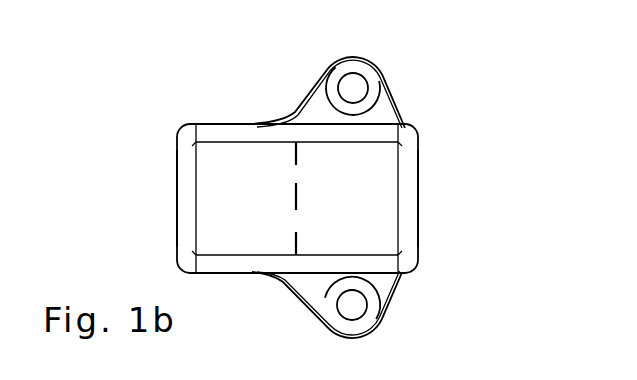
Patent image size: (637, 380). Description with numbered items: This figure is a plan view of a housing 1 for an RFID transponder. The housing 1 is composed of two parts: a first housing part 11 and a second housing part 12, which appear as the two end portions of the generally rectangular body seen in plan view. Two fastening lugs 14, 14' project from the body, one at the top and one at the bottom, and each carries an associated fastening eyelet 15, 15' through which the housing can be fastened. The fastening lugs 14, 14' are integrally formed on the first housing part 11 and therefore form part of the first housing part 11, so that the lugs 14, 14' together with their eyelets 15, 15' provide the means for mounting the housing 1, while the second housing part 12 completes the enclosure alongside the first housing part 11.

The housing 1 is at (433, 148).
The first housing part 11 is at (382, 200).
The second housing part 12 is at (218, 200).
The fastening lug 14 is at (327, 72).
The fastening lug 14' is at (346, 324).
The fastening eyelet 15 is at (385, 80).
The fastening eyelet 15' is at (402, 303).